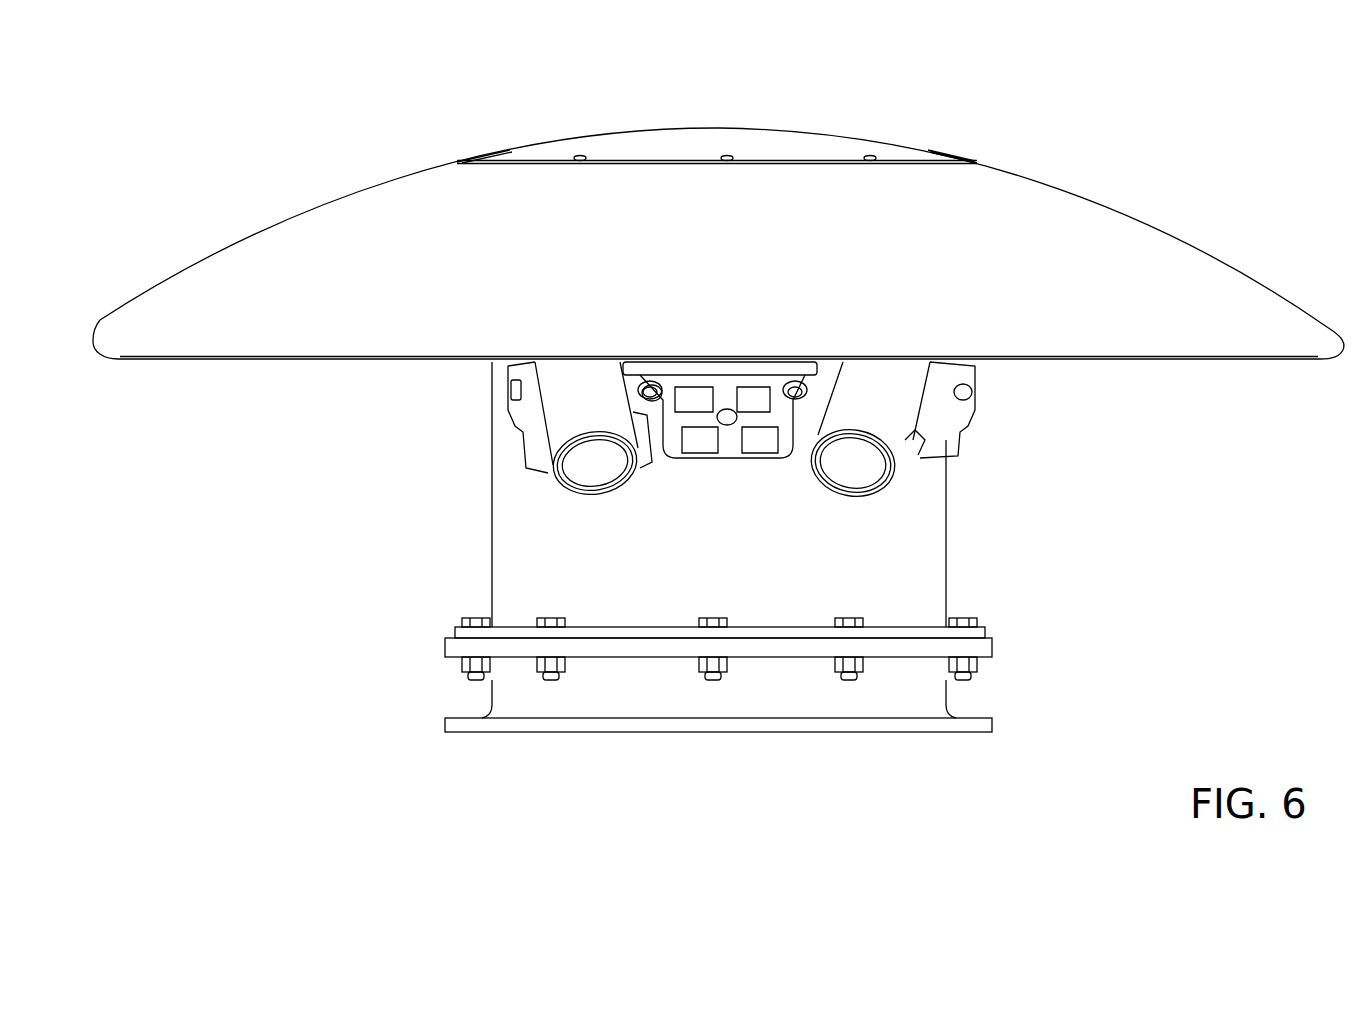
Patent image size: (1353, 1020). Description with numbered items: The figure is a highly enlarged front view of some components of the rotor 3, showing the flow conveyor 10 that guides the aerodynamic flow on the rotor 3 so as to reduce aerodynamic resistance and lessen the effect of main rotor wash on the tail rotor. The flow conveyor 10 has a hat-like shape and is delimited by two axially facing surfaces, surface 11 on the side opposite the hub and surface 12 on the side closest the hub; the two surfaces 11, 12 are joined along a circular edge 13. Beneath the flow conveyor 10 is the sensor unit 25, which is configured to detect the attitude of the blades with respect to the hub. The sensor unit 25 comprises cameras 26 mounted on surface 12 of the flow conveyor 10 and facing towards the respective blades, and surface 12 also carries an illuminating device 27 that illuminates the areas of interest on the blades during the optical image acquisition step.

The rotor 3 is at (1151, 147).
The flow conveyor 10 is at (283, 240).
The surface 11 is at (222, 250).
The surface 12 is at (257, 362).
The circular edge 13 is at (1318, 362).
The sensor unit 25 is at (644, 352).
The camera 26 is at (586, 372).
The illuminating device 27 is at (718, 372).